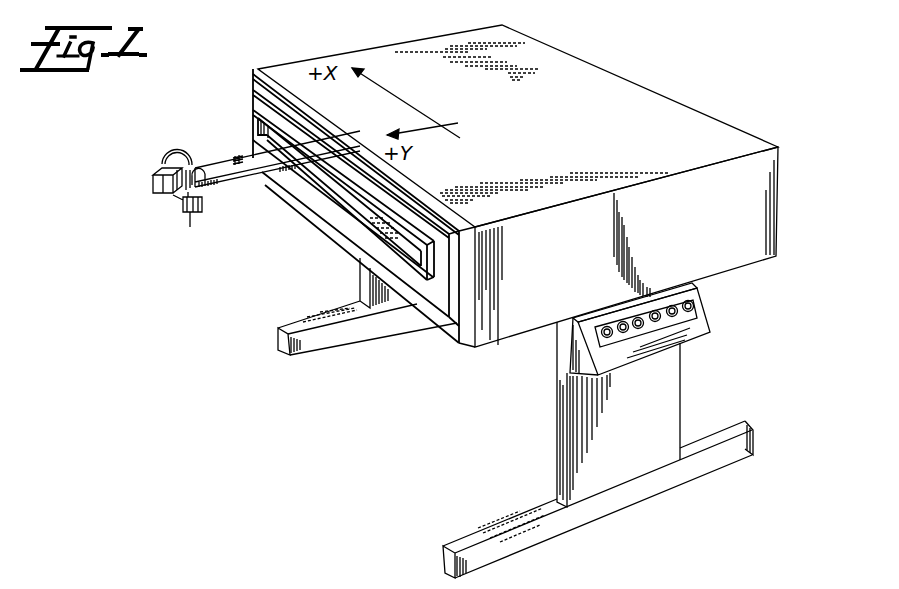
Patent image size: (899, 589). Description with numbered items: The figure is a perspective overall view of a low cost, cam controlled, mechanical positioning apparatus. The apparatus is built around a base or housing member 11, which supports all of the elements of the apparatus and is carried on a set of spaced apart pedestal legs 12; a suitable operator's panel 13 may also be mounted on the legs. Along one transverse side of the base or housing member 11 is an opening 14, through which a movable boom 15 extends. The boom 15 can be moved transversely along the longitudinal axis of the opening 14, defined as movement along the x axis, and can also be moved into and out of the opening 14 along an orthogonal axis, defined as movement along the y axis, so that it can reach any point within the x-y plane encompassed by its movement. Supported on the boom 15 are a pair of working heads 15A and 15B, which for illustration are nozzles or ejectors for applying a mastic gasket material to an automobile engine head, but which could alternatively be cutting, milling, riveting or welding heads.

The base or housing member 11 is at (568, 67).
The pedestal legs 12 is at (675, 375).
The operator's panel 13 is at (697, 300).
The opening 14 is at (256, 127).
The movable boom 15 is at (217, 187).
The working head 15A is at (160, 160).
The working head 15B is at (188, 217).